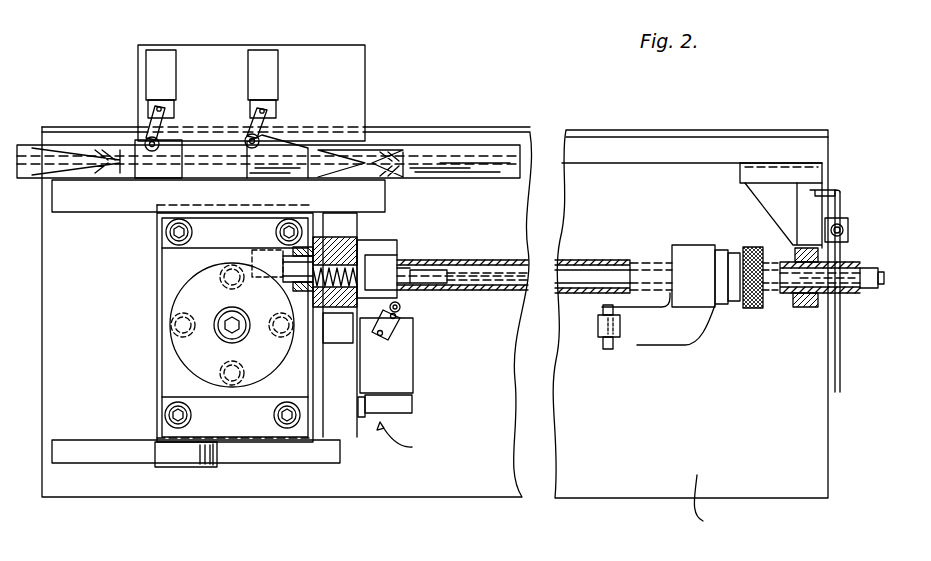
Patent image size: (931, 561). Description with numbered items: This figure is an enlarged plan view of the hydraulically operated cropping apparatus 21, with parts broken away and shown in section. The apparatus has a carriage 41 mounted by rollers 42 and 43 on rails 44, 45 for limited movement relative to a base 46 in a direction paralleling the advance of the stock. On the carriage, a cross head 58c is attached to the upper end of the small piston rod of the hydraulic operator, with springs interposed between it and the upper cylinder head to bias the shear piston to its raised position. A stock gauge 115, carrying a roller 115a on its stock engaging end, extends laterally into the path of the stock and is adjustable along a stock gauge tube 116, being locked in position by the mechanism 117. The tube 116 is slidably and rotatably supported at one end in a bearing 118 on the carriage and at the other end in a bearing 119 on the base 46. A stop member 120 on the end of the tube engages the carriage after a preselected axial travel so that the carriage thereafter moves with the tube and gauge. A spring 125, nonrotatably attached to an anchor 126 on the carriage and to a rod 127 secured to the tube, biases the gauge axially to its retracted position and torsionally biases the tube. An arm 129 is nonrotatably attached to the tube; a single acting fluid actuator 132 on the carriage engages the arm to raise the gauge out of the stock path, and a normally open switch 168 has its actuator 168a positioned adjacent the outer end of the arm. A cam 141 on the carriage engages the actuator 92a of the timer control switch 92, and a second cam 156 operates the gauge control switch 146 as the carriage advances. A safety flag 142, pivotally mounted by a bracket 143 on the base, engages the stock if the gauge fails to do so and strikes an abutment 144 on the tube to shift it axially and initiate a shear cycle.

The timer control switch 92 is at (170, 70).
The switch actuator 92a is at (146, 143).
The cam 141 is at (175, 140).
The timer control switch 146 is at (272, 75).
The second cam 156 is at (280, 136).
The roller 42 is at (385, 152).
The rail 44 is at (478, 175).
The carriage 41 is at (154, 228).
The stop member 120 is at (313, 243).
The anchor 126 is at (290, 260).
The cross head 58c is at (192, 355).
The bearing 118 is at (358, 248).
The arm 129 is at (398, 242).
The spring 125 is at (398, 252).
The switch actuator 168a is at (402, 308).
The switch 168 is at (396, 331).
The fluid actuator 132 is at (413, 369).
The hydraulically operated cropping apparatus 21 is at (408, 440).
The rail 45 is at (318, 458).
The roller 43 is at (190, 458).
The rod 127 is at (565, 267).
The stock gauge tube 116 is at (608, 262).
The bracket 143 is at (840, 213).
The locking mechanism 117 is at (756, 309).
The bearing 119 is at (808, 309).
The roller 115a is at (600, 330).
The stock gauge 115 is at (637, 338).
The abutment 144 is at (842, 300).
The safety flag 142 is at (836, 394).
The base 46 is at (714, 506).